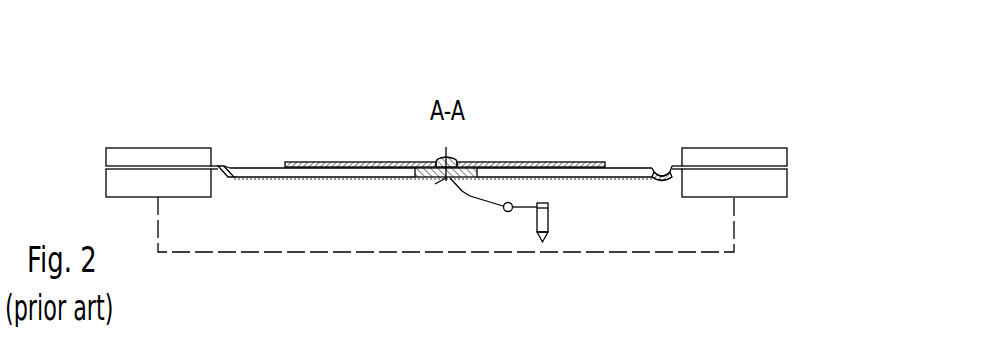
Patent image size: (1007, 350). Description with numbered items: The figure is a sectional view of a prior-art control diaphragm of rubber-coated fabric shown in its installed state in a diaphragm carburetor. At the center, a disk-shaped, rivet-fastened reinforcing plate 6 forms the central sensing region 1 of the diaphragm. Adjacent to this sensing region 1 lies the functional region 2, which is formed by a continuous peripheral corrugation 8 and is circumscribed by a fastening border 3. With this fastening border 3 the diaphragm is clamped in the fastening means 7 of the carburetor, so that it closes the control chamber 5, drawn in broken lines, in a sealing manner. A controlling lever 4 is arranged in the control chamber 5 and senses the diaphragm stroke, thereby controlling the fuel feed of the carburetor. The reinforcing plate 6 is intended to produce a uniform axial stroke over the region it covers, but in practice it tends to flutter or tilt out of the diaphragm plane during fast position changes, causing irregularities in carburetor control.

The sensing region 1 is at (411, 125).
The functional region 2 is at (468, 89).
The fastening border 3 is at (152, 132).
The controlling lever 4 is at (450, 248).
The control chamber 5 is at (446, 248).
The reinforcing plate 6 is at (445, 96).
The fastening means 7 is at (754, 128).
The peripheral corrugation 8 is at (636, 119).